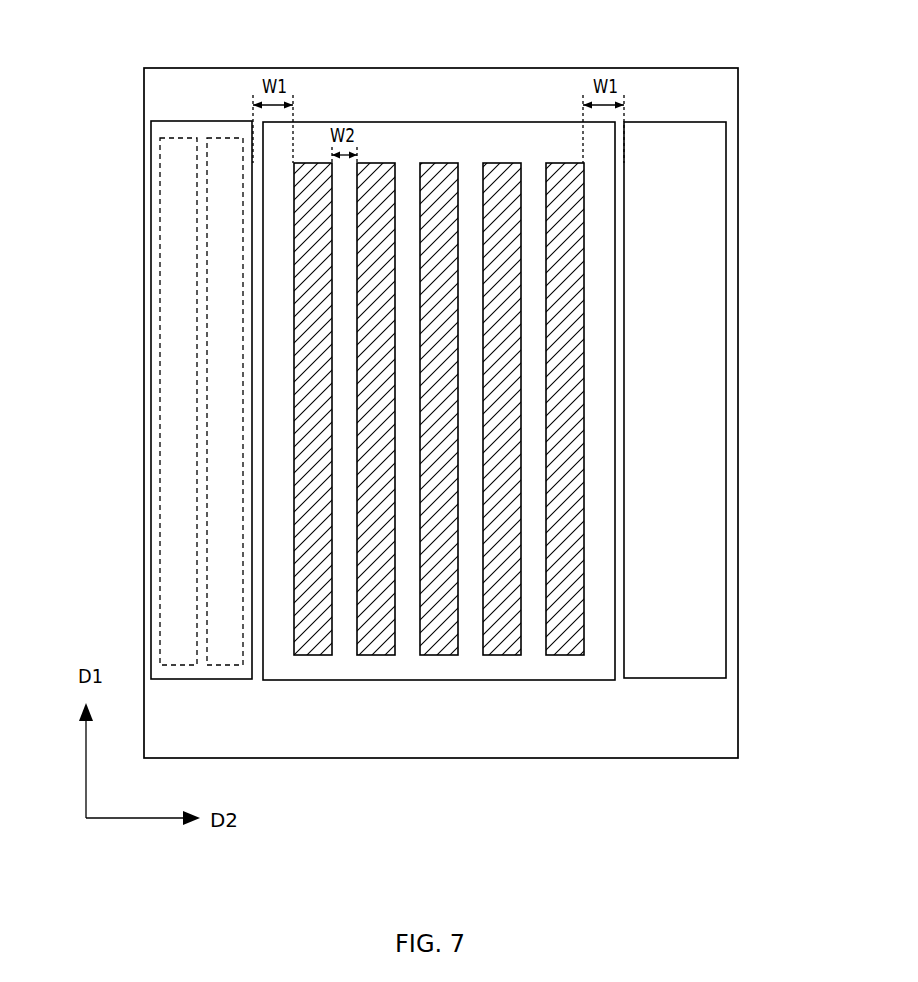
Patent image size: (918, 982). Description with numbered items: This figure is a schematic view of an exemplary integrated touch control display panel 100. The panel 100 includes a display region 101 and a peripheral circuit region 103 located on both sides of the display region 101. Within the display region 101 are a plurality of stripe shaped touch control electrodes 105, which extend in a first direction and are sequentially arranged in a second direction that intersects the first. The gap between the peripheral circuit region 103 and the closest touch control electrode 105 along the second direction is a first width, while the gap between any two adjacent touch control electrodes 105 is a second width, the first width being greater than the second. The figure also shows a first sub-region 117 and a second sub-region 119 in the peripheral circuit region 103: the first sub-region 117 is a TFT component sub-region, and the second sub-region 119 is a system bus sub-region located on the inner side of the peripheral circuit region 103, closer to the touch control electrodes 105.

The integrated touch control display panel 100 is at (139, 40).
The display region 101 is at (600, 318).
The peripheral circuit region 103 is at (692, 243).
The touch control electrodes 105 is at (570, 395).
The first sub-region 117 is at (177, 163).
The second sub-region 119 is at (223, 208).